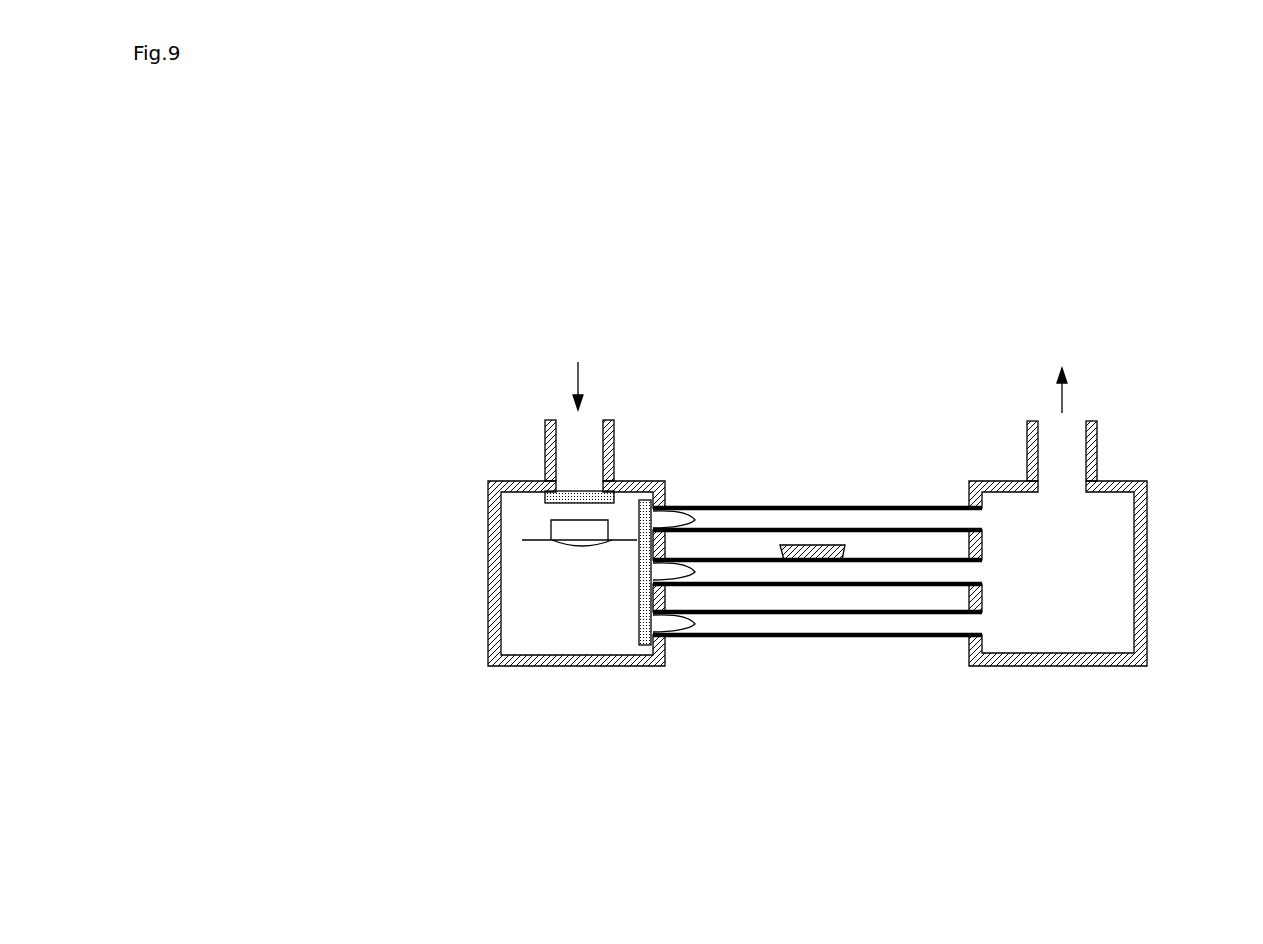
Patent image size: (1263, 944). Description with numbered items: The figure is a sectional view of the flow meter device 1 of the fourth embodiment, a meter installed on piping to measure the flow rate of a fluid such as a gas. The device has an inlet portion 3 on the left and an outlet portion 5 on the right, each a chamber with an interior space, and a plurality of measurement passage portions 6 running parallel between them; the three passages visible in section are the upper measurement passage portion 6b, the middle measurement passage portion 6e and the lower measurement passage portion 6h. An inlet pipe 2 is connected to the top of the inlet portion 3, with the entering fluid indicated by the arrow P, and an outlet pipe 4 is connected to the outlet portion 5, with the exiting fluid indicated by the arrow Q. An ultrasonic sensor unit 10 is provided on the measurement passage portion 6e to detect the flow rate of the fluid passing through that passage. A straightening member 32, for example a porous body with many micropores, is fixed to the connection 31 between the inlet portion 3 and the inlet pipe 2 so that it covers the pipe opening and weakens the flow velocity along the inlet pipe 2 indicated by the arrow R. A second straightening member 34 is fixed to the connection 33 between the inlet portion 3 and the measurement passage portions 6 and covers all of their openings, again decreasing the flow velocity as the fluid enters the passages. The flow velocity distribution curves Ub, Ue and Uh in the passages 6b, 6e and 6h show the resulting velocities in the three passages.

The flow meter device 1 is at (1195, 496).
The inlet pipe 2 is at (614, 432).
The inlet portion 3 is at (545, 665).
The outlet pipe 4 is at (1097, 465).
The outlet portion 5 is at (1078, 658).
The measurement passage portions 6 is at (940, 655).
The measurement passage portion 6b is at (747, 507).
The measurement passage portion 6e is at (860, 558).
The measurement passage portion 6h is at (950, 640).
The ultrasonic sensor unit 10 is at (815, 547).
The connection 31 is at (592, 484).
The straightening member 32 is at (562, 503).
The connection 33 is at (647, 598).
The straightening member 34 is at (637, 590).
The inlet flow P is at (573, 367).
The outlet flow Q is at (1055, 372).
The arrow R is at (572, 545).
The flow velocity Ub is at (663, 518).
The flow velocity Ue is at (693, 573).
The flow velocity Uh is at (683, 634).